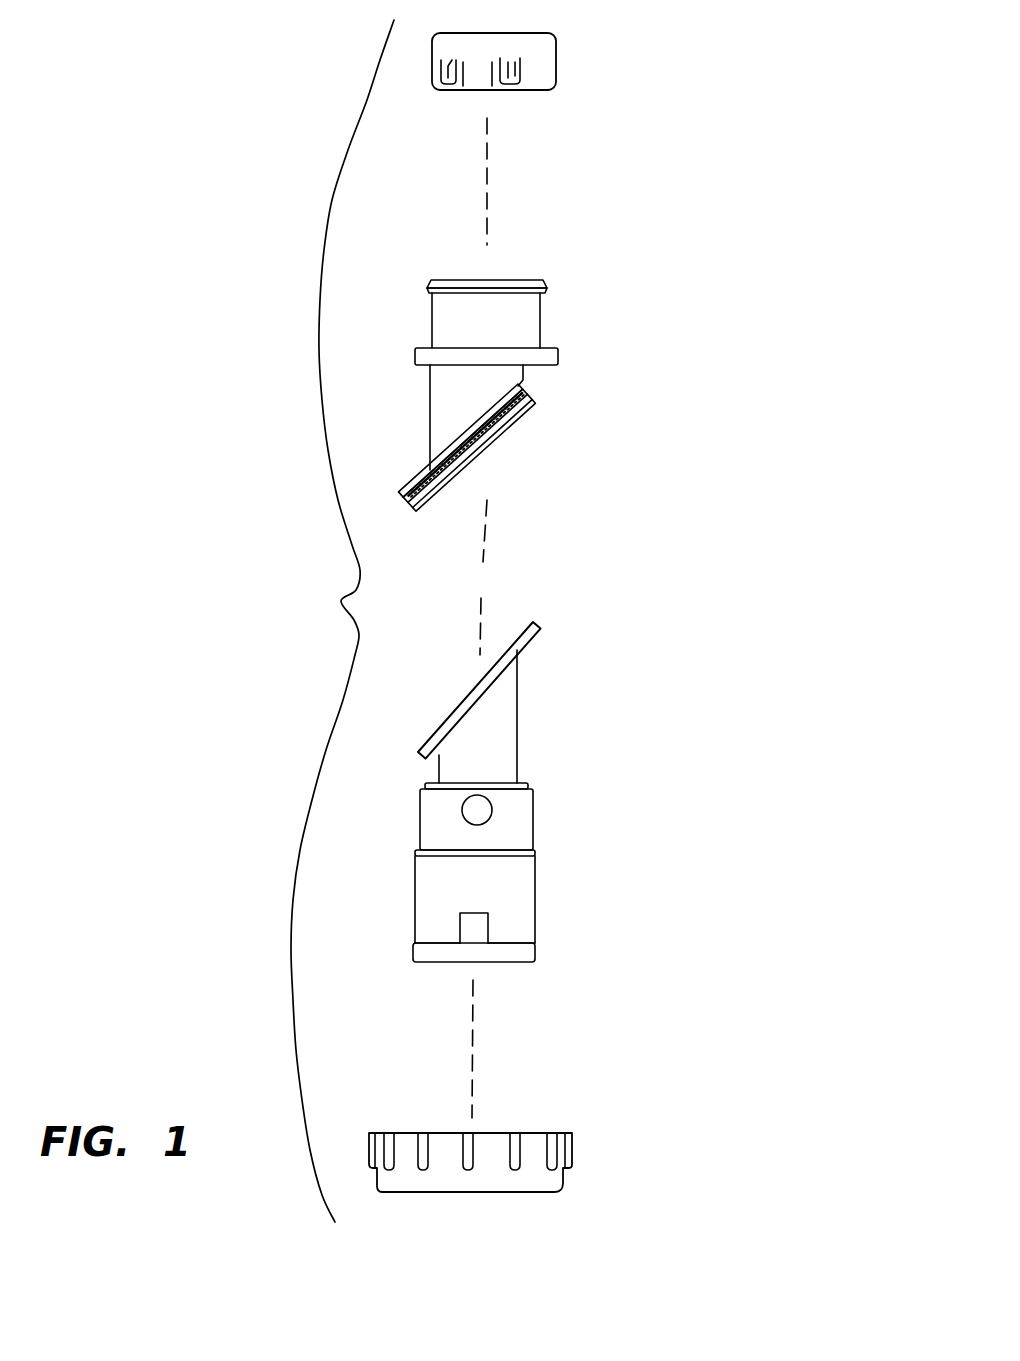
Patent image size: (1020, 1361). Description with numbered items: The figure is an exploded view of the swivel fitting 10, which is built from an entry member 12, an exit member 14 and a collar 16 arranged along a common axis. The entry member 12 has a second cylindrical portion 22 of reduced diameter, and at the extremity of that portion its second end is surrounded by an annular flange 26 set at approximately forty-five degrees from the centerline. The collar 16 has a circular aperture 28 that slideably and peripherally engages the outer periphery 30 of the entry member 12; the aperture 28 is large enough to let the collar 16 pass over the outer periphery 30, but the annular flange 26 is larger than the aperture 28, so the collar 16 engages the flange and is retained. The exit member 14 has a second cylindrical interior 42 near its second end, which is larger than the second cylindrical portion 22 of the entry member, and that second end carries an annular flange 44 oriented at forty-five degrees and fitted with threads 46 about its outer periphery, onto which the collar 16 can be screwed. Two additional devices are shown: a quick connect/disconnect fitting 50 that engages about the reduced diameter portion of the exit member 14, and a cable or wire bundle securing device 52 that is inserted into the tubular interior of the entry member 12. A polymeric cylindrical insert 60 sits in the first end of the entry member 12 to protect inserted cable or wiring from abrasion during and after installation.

The swivel fitting 10 is at (322, 592).
The entry member 12 is at (548, 813).
The exit member 14 is at (545, 394).
The collar 16 is at (551, 1188).
The second cylindrical portion 22 is at (520, 818).
The annular flange 26 is at (543, 628).
The circular aperture 28 is at (478, 1218).
The outer periphery 30 is at (525, 880).
The second cylindrical interior 42 is at (445, 405).
The annular flange 44 is at (467, 470).
The threads 46 is at (533, 393).
The quick connect/disconnect fitting 50 is at (558, 60).
The cable or wire bundle securing device 52 is at (483, 923).
The cylindrical insert 60 is at (515, 955).